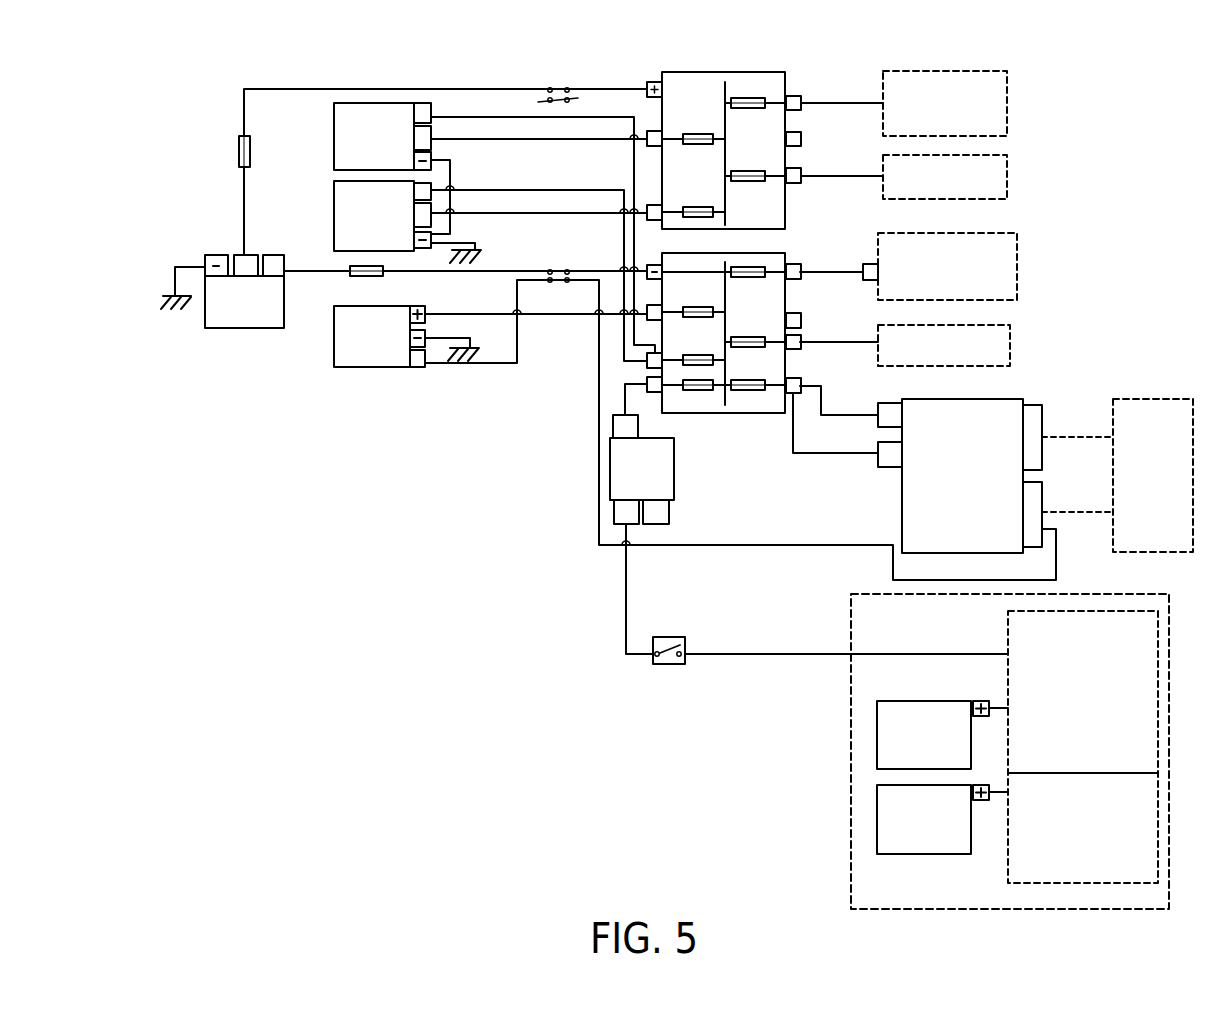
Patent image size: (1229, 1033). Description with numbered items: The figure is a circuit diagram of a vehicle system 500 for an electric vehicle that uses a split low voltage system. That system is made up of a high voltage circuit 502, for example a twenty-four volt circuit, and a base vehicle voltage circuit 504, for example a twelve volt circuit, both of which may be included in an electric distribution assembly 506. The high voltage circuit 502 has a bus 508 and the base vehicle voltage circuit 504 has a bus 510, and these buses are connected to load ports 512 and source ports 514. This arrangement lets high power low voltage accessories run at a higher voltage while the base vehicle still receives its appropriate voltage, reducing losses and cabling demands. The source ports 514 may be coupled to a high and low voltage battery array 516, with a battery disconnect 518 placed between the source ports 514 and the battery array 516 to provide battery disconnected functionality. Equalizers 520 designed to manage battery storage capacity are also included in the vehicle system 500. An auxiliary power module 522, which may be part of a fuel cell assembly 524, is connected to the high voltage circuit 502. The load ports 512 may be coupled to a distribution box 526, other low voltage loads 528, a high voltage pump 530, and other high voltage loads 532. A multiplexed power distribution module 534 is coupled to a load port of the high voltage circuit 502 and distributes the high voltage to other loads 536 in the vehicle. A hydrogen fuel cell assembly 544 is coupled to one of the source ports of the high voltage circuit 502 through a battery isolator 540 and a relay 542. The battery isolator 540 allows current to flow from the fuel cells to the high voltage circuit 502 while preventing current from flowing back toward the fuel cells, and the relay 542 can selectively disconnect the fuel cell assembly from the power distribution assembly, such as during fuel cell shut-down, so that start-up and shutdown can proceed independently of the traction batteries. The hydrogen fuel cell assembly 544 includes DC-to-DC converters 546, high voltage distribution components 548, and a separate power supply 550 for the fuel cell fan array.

The vehicle system 500 is at (182, 124).
The high voltage circuit 502 is at (697, 252).
The base vehicle voltage circuit 504 is at (703, 72).
The electric distribution assembly 506 is at (634, 71).
The bus 508 is at (728, 326).
The bus 510 is at (725, 158).
The load ports 512 is at (790, 96).
The source ports 514 is at (647, 86).
The high and low voltage battery array 516 is at (205, 322).
The battery disconnect 518 is at (540, 101).
The equalizers 520 is at (334, 195).
The auxiliary power module 522 is at (334, 360).
The fuel cell assembly 524 is at (270, 360).
The distribution box 526 is at (1008, 111).
The low voltage loads 528 is at (1008, 183).
The high voltage pump 530 is at (1010, 352).
The high voltage loads 532 is at (1018, 283).
The multiplexed power distribution module 534 is at (902, 510).
The other loads 536 is at (1153, 398).
The battery isolator 540 is at (675, 478).
The relay 542 is at (668, 637).
The hydrogen fuel cell assembly 544 is at (851, 873).
The DC-to-DC converters 546 is at (877, 803).
The high voltage distribution components 548 is at (1008, 675).
The separate power supply 550 is at (1008, 860).